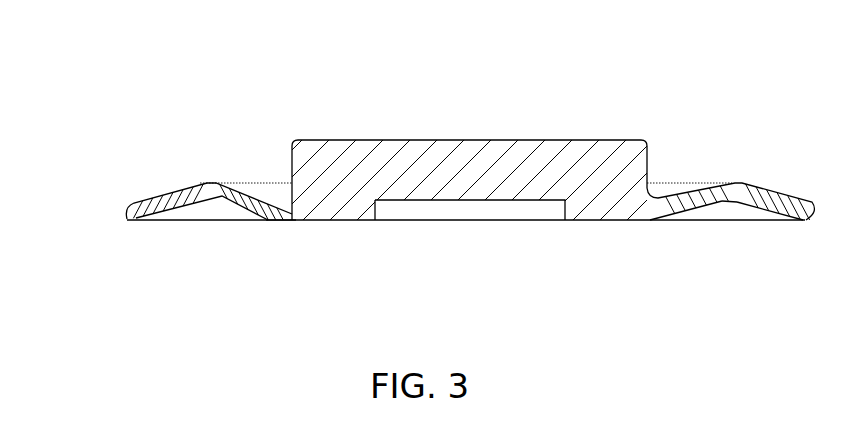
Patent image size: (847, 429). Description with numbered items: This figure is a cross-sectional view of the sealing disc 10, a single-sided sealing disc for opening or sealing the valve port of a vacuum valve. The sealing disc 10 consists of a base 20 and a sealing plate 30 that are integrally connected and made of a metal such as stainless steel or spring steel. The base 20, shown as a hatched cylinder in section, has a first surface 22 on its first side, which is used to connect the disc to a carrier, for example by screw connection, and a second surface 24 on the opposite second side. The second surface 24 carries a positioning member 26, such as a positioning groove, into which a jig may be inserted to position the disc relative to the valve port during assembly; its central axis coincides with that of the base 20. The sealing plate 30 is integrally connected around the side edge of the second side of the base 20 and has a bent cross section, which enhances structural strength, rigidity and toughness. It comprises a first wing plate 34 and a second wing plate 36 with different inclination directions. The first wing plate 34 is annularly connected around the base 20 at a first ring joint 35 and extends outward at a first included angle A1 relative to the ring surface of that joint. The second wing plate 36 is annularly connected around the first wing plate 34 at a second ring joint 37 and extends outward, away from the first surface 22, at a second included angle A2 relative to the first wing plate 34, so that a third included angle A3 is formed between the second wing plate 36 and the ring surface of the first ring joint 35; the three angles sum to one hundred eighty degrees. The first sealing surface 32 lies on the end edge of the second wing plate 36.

The sealing disc 10 is at (237, 54).
The base 20 is at (403, 165).
The first surface 22 is at (528, 142).
The second surface 24 is at (578, 222).
The positioning member 26 is at (377, 223).
The sealing plate 30 is at (163, 102).
The first sealing surface 32 is at (126, 218).
The first wing plate 34 is at (235, 185).
The first ring joint 35 is at (280, 231).
The second wing plate 36 is at (133, 201).
The second ring joint 37 is at (734, 169).
The first included angle A1 is at (675, 218).
The second included angle A2 is at (728, 204).
The third included angle A3 is at (773, 218).